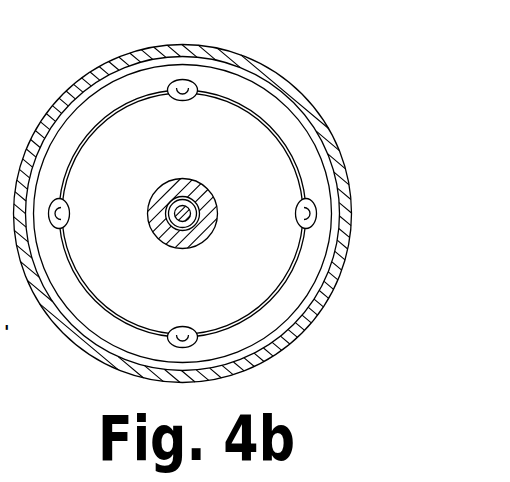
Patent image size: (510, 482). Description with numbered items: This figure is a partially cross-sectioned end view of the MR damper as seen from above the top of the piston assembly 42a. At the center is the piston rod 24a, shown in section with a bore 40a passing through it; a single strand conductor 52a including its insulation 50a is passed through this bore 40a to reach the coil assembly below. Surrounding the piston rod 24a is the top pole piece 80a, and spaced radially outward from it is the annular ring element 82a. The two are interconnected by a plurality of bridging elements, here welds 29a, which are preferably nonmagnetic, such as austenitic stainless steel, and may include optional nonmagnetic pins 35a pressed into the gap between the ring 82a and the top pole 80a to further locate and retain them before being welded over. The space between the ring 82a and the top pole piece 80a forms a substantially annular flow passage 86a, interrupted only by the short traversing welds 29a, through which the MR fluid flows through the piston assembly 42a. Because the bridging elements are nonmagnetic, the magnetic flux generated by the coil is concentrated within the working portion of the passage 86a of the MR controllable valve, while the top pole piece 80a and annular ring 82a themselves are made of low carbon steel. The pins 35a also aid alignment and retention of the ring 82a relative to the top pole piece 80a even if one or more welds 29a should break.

The piston assembly 42a is at (74, 101).
The welds 29a is at (182, 80).
The annular ring element 82a is at (287, 120).
The top pole piece 80a is at (209, 136).
The piston rod 24a is at (170, 182).
The bore 40a is at (202, 202).
The single strand conductor 52a is at (198, 210).
The insulation 50a is at (162, 230).
The nonmagnetic pins 35a is at (313, 208).
The flow passage 86a is at (88, 298).